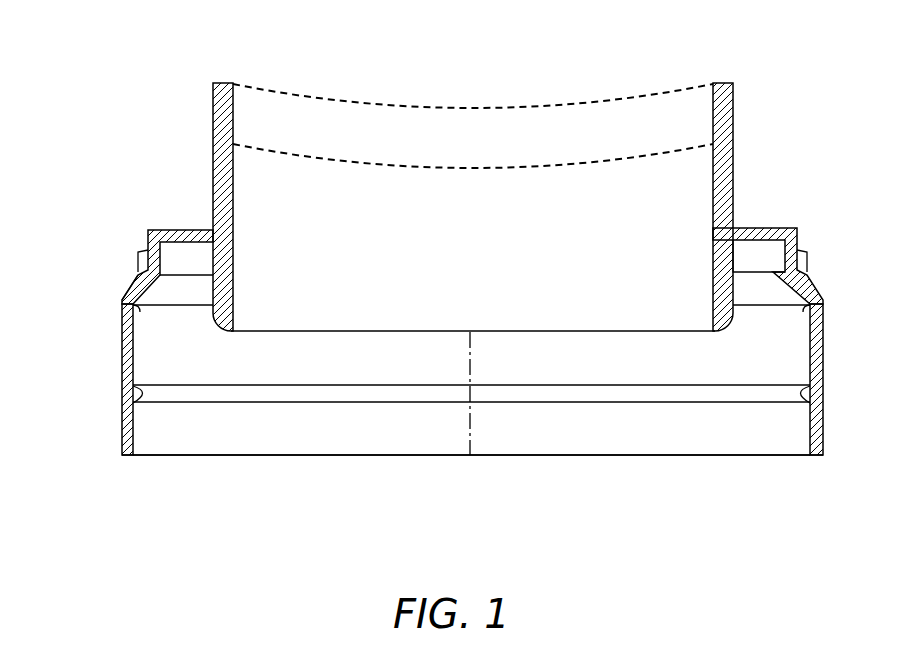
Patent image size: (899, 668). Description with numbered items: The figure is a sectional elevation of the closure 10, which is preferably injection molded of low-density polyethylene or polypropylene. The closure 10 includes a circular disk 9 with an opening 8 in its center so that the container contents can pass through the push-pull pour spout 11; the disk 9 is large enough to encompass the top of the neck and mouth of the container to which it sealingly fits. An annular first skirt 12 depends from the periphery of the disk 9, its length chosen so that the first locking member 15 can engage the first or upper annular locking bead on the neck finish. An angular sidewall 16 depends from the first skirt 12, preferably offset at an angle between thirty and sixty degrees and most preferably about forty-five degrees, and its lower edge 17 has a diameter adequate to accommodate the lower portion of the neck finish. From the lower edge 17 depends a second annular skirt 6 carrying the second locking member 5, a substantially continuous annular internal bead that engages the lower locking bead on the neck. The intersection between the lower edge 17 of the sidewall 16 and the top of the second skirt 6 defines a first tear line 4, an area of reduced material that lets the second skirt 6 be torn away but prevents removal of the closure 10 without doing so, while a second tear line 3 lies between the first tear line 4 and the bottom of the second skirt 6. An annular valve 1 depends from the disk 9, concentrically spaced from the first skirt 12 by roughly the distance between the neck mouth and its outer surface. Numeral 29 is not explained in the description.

The annular valve 1 is at (720, 320).
The second tear line 3 is at (470, 370).
The first tear line 4 is at (127, 302).
The second locking member 5 is at (122, 404).
The second annular skirt 6 is at (118, 366).
The opening 8 is at (570, 280).
The circular disk 9 is at (765, 228).
The closure 10 is at (268, 444).
The push-pull pour spout 11 is at (737, 88).
The first skirt 12 is at (138, 253).
The first locking member 15 is at (168, 264).
The angular sidewall 16 is at (130, 287).
The lower edge 17 is at (122, 332).
The bottom wall 29 is at (355, 456).